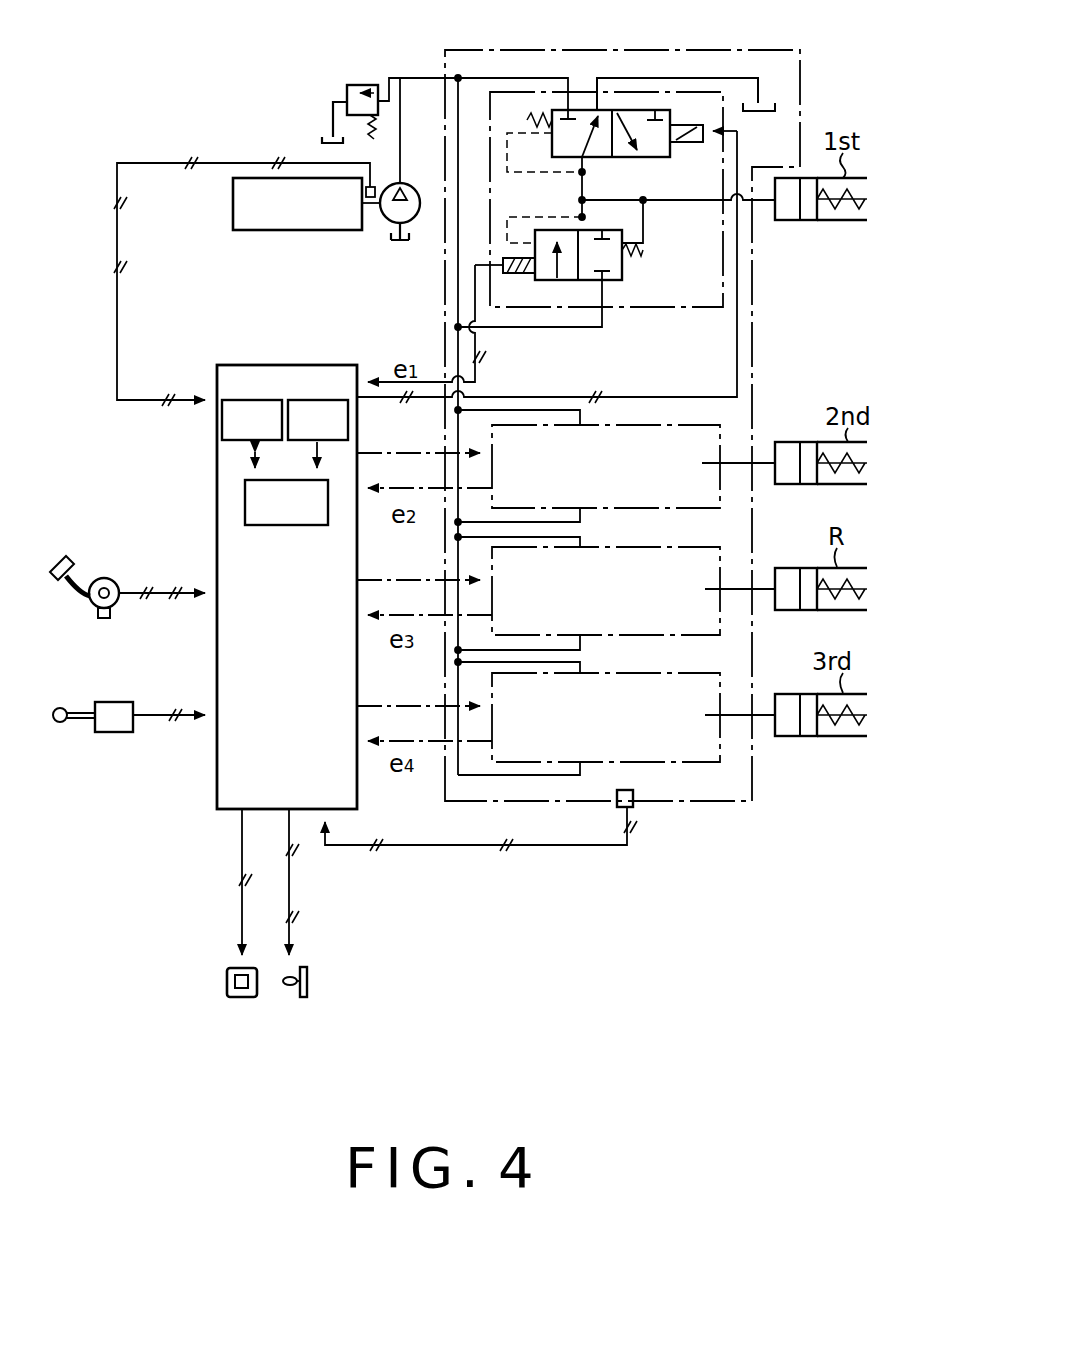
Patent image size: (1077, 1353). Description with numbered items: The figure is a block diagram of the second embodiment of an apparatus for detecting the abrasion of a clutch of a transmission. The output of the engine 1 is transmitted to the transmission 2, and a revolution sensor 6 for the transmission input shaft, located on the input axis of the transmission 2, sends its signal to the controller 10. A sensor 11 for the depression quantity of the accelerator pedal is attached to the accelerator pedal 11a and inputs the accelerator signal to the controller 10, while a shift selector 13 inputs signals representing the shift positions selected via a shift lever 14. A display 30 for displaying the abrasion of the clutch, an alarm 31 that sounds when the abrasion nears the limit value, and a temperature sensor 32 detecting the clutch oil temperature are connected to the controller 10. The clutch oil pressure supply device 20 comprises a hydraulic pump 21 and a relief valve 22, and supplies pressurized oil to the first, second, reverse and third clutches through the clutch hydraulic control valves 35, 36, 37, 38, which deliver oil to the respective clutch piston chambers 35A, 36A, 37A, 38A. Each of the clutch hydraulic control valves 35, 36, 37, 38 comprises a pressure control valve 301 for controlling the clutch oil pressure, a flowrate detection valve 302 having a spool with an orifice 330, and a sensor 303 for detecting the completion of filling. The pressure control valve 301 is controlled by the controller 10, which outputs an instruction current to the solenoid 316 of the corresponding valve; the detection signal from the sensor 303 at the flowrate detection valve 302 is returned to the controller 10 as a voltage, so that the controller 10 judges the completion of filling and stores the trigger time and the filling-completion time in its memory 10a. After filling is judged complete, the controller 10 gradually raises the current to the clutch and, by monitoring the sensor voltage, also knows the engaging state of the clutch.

The engine 1 is at (252, 232).
The transmission 2 is at (730, 803).
The revolution sensor for transmission input shaft 6 is at (406, 183).
The controller 10 is at (287, 560).
The memory 10a is at (320, 399).
The sensor for depression quantity of accelerator pedal 11 is at (123, 588).
The accelerator pedal 11a is at (70, 557).
The shift selector 13 is at (120, 733).
The shift lever 14 is at (62, 723).
The clutch oil pressure supply device 20 is at (318, 85).
The hydraulic pump 21 is at (377, 230).
The relief valve 22 is at (361, 85).
The display 30 is at (243, 999).
The alarm 31 is at (302, 998).
The temperature sensor 32 is at (637, 808).
The clutch hydraulic control valve 35 is at (618, 307).
The clutch piston chamber 35A is at (788, 222).
The clutch hydraulic control valve 36 is at (633, 466).
The clutch piston chamber 36A is at (790, 442).
The clutch hydraulic control valve 37 is at (633, 591).
The clutch piston chamber 37A is at (788, 568).
The clutch hydraulic control valve 38 is at (633, 717).
The clutch piston chamber 38A is at (793, 738).
The pressure control valve 301 is at (610, 176).
The flowrate detection valve 302 is at (624, 272).
The sensor for detecting completion of filling 303 is at (505, 273).
The solenoid 316 is at (684, 124).
The orifice 330 is at (604, 198).